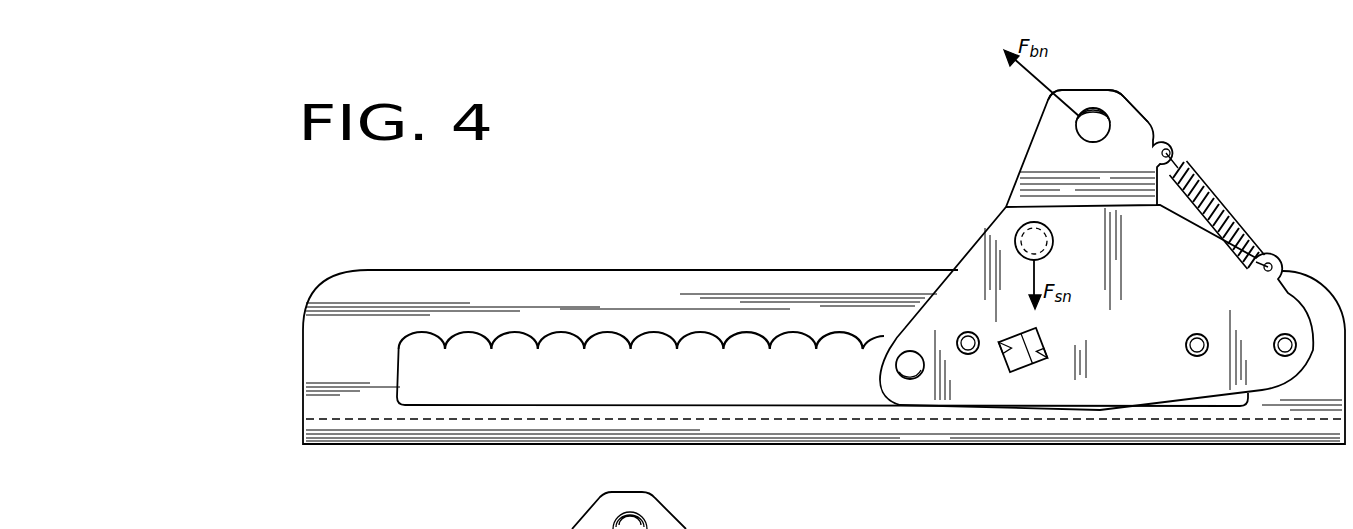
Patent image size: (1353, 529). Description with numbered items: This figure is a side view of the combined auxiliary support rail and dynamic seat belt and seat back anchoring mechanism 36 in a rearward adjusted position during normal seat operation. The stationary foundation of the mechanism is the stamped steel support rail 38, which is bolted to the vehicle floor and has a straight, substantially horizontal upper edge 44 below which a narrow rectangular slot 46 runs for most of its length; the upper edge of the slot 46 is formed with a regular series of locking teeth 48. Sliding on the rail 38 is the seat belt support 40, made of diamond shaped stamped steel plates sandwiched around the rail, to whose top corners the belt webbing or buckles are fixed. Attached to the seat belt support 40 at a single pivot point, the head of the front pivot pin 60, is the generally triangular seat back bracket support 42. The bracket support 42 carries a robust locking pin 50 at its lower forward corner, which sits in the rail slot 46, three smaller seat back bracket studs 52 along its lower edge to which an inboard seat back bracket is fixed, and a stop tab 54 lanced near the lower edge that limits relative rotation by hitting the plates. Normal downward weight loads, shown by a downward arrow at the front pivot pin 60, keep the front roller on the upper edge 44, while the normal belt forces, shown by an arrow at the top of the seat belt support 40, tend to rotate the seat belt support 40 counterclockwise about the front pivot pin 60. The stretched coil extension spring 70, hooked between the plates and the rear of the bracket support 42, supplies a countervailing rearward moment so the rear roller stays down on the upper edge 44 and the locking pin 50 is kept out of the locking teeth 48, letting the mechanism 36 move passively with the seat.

The combined auxiliary support rail and dynamic seat belt and seat back anchoring me 36 is at (1008, 117).
The support rail 38 is at (292, 324).
The seat belt support 40 is at (1121, 82).
The seat back bracket support 42 is at (1112, 418).
The upper edge 44 is at (406, 268).
The slot 46 is at (497, 403).
The locking teeth 48 is at (540, 347).
The locking pin 50 is at (910, 372).
The seat back bracket studs 52 is at (968, 355).
The stop tab 54 is at (1024, 368).
The front pivot pin 60 is at (1008, 204).
The coil extension spring 70 is at (1230, 212).